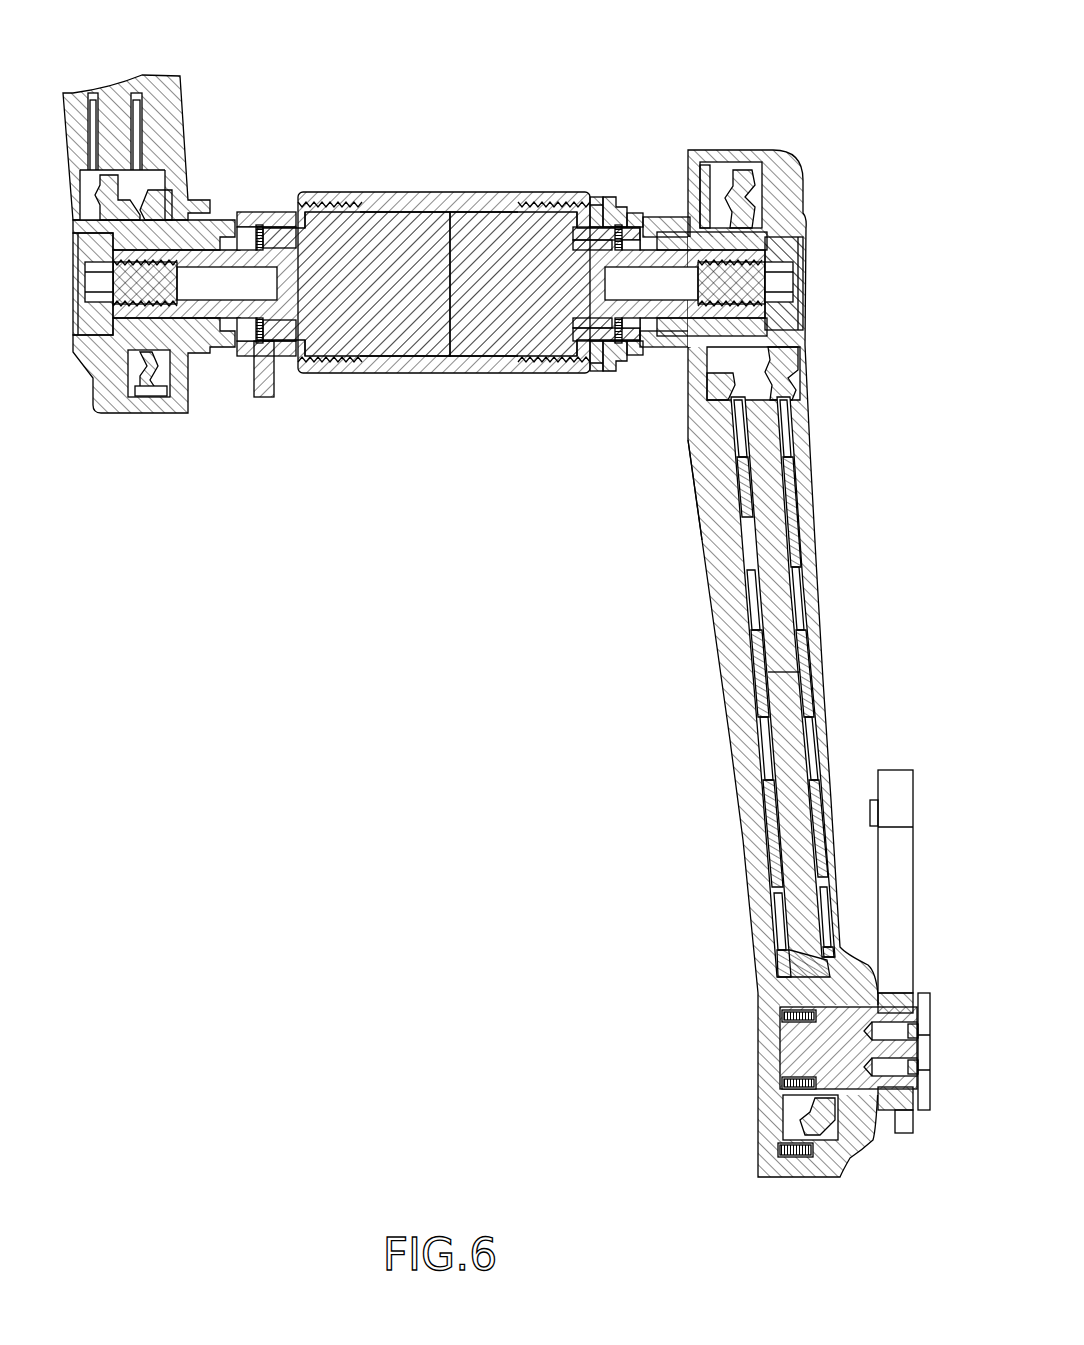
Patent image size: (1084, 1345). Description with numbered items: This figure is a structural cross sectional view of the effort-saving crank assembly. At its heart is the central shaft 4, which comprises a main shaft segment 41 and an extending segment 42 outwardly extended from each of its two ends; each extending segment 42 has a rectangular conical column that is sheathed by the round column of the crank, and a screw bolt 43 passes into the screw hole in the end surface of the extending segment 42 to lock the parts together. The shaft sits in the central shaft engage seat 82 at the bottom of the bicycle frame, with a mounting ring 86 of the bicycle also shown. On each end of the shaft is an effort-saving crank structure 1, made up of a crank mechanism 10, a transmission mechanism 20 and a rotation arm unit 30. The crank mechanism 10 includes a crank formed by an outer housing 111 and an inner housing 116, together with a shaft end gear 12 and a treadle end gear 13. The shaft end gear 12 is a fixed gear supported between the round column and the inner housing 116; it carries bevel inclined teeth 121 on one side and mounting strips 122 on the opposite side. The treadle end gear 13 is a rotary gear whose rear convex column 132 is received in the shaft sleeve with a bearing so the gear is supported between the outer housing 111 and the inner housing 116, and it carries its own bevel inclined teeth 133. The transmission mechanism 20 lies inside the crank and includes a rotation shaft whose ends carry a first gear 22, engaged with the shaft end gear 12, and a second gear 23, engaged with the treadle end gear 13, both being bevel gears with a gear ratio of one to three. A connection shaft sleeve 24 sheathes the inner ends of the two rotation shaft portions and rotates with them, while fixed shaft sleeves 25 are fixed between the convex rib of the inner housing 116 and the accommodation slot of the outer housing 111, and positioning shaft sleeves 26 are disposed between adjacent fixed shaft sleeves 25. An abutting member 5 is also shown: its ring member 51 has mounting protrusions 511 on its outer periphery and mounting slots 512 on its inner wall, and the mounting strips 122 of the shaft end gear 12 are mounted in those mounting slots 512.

The effort-saving crank structure 1 is at (200, 93).
The central shaft 4 is at (439, 355).
The abutting member 5 is at (618, 188).
The crank mechanism 10 is at (757, 687).
The shaft end gear 12 is at (738, 205).
The treadle end gear 13 is at (825, 1120).
The transmission mechanism 20 is at (782, 690).
The first gear 22 is at (123, 193).
The second gear 23 is at (793, 975).
The connection shaft sleeve 24 is at (757, 650).
The fixed shaft sleeve 25 is at (767, 748).
The positioning shaft sleeve 26 is at (773, 838).
The rotation arm unit 30 is at (900, 780).
The main shaft segment 41 is at (455, 327).
The extending segment 42 is at (632, 307).
The screw bolt 43 is at (782, 250).
The ring member 51 is at (598, 217).
The central shaft engage seat 82 is at (380, 370).
The mounting ring 86 is at (527, 207).
The outer housing 111 is at (802, 555).
The inner housing 116 is at (697, 463).
The bevel inclined teeth 121 is at (160, 193).
The mounting strips 122 is at (245, 222).
The rear convex column 132 is at (812, 1060).
The bevel inclined teeth 133 is at (817, 995).
The mounting protrusions 511 is at (585, 218).
The mounting slots 512 is at (630, 217).